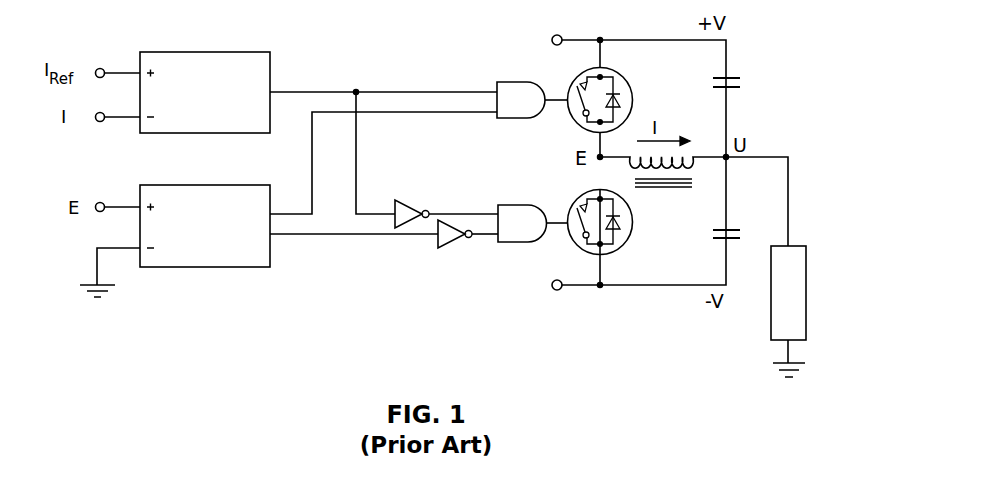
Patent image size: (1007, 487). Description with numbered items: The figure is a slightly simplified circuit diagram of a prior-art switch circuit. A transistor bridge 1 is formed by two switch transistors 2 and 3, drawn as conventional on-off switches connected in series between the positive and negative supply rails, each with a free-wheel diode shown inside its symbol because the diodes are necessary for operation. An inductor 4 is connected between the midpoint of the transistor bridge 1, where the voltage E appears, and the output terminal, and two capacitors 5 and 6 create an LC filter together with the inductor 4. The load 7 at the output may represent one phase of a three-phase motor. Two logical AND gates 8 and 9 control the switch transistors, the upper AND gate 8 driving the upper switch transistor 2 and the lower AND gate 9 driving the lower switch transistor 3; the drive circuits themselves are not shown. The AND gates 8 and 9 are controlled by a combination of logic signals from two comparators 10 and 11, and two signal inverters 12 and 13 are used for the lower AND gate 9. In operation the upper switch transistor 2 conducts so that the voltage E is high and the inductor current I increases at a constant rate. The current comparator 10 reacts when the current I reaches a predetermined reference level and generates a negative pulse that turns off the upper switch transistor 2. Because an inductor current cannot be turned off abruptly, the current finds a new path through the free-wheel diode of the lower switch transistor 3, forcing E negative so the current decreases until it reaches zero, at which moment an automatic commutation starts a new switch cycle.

The transistor bridge 1 is at (629, 80).
The upper switch transistor 2 is at (634, 100).
The lower switch transistor 3 is at (634, 222).
The inductor 4 is at (690, 176).
The capacitor 5 is at (741, 83).
The capacitor 6 is at (741, 235).
The load 7 is at (797, 246).
The AND gate 8 is at (510, 81).
The AND gate 9 is at (510, 204).
The current comparator 10 is at (187, 52).
The comparator 11 is at (188, 185).
The signal inverter 12 is at (409, 200).
The signal inverter 13 is at (450, 248).